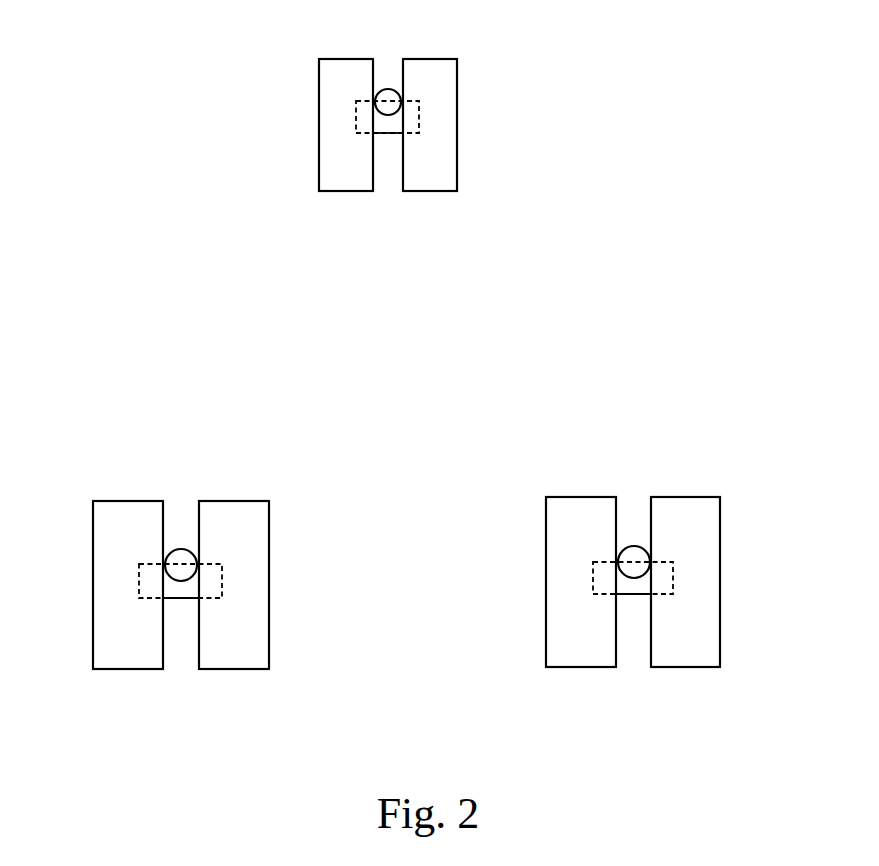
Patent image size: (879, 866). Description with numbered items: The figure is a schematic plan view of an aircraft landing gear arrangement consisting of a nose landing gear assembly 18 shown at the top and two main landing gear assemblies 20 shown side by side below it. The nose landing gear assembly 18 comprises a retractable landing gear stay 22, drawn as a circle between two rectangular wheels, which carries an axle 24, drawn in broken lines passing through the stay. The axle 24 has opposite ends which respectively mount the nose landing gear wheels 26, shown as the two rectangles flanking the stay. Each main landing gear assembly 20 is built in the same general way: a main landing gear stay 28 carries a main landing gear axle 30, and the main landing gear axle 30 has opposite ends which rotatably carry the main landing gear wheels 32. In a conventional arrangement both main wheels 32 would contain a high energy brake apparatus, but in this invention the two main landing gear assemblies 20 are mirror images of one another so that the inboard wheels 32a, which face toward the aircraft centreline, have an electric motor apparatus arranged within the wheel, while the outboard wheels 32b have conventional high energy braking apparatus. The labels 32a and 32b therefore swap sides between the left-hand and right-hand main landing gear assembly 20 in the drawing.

The nose landing gear assembly 18 is at (410, 121).
The main landing gear assembly 20 is at (417, 549).
The retractable landing gear stay 22 is at (388, 89).
The axle 24 is at (388, 133).
The nose landing gear wheels 26 is at (319, 126).
The main landing gear stay 28 is at (181, 549).
The main landing gear axle 30 is at (181, 598).
The main landing gear wheels 32 is at (417, 584).
The inboard wheels 32a is at (255, 501).
The outboard wheels 32b is at (110, 501).